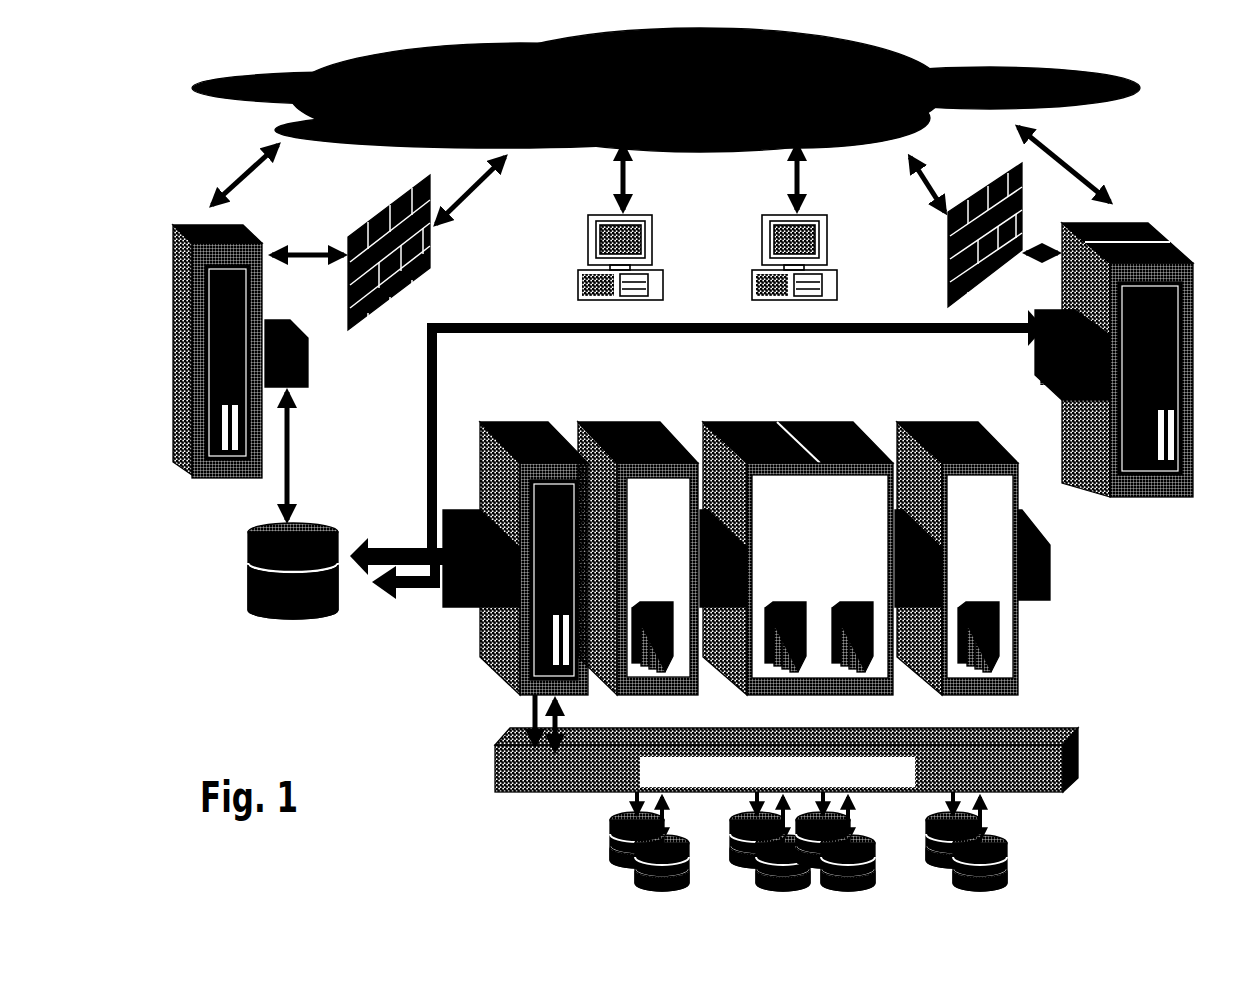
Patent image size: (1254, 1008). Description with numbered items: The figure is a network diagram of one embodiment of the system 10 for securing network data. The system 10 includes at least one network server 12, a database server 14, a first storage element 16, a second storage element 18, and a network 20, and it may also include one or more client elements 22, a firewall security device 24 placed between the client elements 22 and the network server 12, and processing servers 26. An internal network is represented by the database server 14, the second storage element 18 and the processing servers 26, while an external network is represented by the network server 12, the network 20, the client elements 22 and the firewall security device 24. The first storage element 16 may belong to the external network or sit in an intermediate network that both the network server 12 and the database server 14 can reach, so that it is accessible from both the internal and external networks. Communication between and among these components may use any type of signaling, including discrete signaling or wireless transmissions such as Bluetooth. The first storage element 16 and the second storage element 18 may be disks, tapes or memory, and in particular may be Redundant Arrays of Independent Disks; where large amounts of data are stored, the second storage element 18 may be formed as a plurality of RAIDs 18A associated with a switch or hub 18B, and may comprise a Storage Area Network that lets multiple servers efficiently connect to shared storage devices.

The system 10 is at (196, 693).
The network server 12 is at (174, 343).
The database server 14 is at (483, 672).
The first storage element 16 is at (320, 525).
The second storage element 18 is at (725, 818).
The plurality of RAIDs 18A is at (495, 783).
The switch or hub 18B is at (610, 855).
The network 20 is at (243, 115).
The client element 22 is at (750, 243).
The firewall security device 24 is at (440, 258).
The processing servers 26 is at (811, 515).